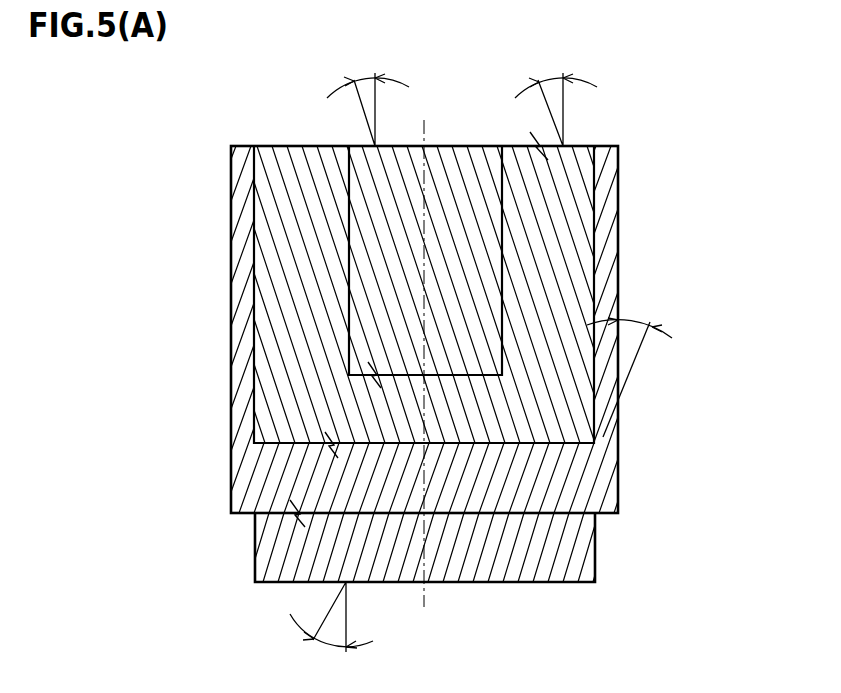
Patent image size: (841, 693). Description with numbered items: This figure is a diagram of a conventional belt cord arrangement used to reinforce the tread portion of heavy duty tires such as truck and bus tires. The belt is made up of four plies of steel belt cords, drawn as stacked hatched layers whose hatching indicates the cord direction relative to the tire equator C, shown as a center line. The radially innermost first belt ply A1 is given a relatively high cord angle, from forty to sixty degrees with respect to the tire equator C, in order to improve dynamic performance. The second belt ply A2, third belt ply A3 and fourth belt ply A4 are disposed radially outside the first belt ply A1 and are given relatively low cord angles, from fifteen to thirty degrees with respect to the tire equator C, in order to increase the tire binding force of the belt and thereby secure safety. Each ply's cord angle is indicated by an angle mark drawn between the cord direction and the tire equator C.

The first belt ply A1 is at (597, 553).
The second belt ply A2 is at (619, 467).
The third belt ply A3 is at (595, 252).
The fourth belt ply A4 is at (500, 197).
The tire equator C is at (422, 350).